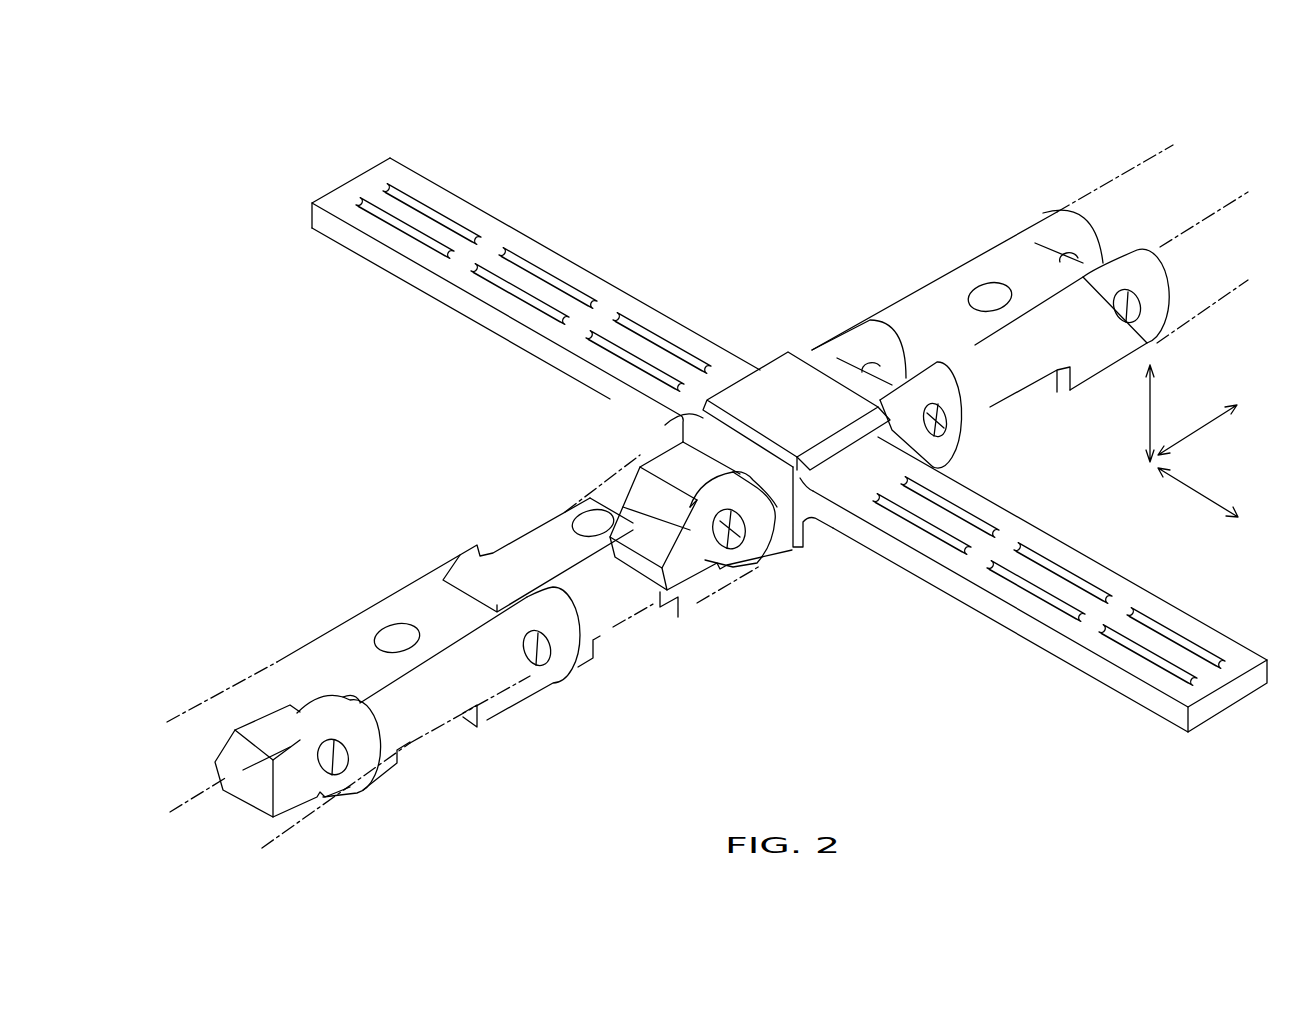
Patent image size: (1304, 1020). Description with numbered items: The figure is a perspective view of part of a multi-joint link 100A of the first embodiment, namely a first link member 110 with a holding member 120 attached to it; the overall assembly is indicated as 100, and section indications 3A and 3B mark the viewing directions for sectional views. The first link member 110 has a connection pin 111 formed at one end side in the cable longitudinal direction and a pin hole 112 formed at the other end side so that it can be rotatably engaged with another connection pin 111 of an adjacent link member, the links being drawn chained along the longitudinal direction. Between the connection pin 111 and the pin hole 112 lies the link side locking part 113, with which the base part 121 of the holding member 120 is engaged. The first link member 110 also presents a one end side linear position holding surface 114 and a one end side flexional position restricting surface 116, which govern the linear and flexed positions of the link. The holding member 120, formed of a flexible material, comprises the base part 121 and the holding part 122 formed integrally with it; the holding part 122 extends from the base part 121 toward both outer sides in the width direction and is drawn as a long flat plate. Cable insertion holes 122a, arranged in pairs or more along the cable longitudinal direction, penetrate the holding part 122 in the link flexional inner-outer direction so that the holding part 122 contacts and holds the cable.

The chain guide / conveying device 100 is at (590, 110).
The multi-joint link 100A is at (961, 229).
The first link member 110 is at (840, 340).
The connection pin 111 is at (752, 550).
The pin hole 112 is at (955, 420).
The link side locking part 113 is at (675, 438).
The one end side linear position holding surface 114 is at (683, 573).
The one end side flexional position restricting surface 116 is at (637, 525).
The holding member 120 is at (734, 229).
The base part 121 is at (778, 372).
The holding part 122 is at (605, 312).
The cable insertion holes 122a is at (527, 266).
The section line 3A is at (802, 228).
The section line 3B is at (1233, 158).